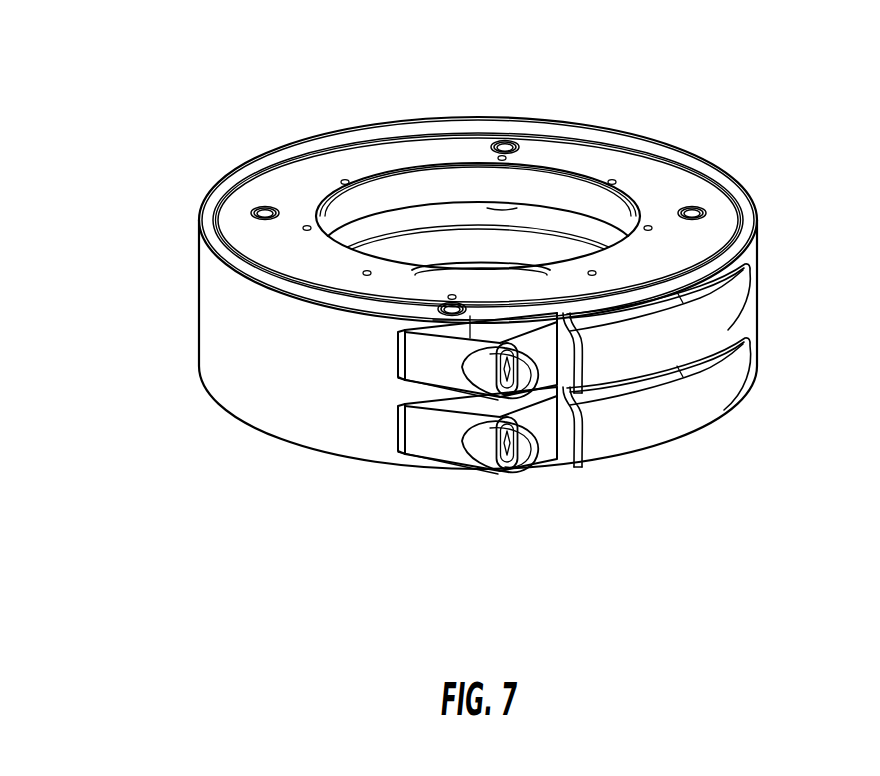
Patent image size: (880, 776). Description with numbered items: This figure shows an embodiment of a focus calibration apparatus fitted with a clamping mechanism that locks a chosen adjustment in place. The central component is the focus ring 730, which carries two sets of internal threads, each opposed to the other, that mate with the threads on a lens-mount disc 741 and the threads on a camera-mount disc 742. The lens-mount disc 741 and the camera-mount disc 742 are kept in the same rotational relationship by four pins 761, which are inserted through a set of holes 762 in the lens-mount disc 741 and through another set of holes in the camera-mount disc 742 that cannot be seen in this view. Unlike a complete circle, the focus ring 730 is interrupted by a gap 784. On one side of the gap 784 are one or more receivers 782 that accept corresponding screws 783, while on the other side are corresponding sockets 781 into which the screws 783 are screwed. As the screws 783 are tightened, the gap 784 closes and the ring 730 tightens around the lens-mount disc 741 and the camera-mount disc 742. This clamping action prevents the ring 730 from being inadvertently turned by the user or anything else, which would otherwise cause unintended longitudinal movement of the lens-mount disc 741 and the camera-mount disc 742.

The focus ring 730 is at (199, 293).
The lens-mount disc 741 is at (577, 155).
The camera-mount disc 742 is at (500, 252).
The pins 761 is at (211, 193).
The holes 762 is at (273, 207).
The sockets 781 is at (657, 421).
The receivers 782 is at (480, 443).
The screws 783 is at (505, 462).
The gap 784 is at (573, 464).